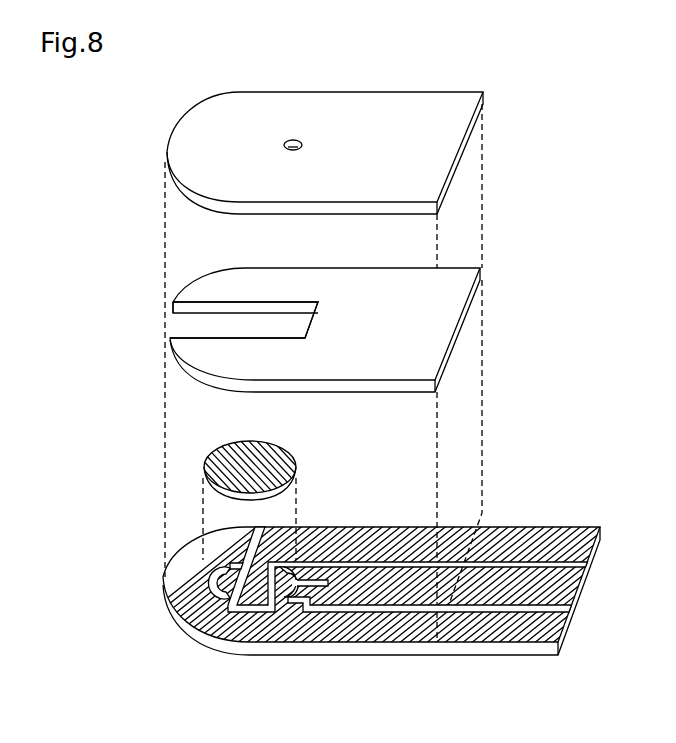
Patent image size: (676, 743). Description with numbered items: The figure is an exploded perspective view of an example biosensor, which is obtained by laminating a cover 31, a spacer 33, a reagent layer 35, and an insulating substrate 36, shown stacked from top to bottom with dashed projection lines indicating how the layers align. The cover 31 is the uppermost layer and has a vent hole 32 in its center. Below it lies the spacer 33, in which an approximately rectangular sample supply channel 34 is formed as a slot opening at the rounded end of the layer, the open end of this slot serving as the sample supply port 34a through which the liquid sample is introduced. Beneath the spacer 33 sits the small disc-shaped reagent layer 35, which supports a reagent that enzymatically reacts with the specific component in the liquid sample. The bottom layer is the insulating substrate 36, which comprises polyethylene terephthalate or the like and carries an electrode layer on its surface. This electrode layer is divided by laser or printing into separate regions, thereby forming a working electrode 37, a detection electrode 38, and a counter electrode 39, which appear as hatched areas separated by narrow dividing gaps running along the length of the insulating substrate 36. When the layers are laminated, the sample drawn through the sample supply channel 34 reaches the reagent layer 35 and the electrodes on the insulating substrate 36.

The cover 31 is at (447, 138).
The vent hole 32 is at (294, 140).
The spacer 33 is at (450, 300).
The sample supply channel 34 is at (235, 325).
The sample supply port 34a is at (178, 327).
The reagent layer 35 is at (278, 455).
The insulating substrate 36 is at (350, 650).
The working electrode 37 is at (562, 543).
The detection electrode 38 is at (572, 586).
The counter electrode 39 is at (555, 628).